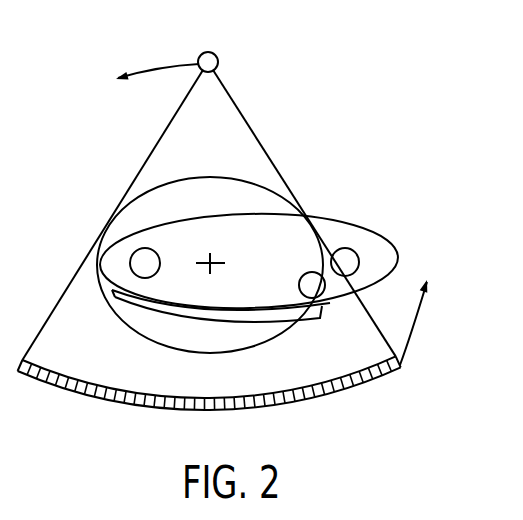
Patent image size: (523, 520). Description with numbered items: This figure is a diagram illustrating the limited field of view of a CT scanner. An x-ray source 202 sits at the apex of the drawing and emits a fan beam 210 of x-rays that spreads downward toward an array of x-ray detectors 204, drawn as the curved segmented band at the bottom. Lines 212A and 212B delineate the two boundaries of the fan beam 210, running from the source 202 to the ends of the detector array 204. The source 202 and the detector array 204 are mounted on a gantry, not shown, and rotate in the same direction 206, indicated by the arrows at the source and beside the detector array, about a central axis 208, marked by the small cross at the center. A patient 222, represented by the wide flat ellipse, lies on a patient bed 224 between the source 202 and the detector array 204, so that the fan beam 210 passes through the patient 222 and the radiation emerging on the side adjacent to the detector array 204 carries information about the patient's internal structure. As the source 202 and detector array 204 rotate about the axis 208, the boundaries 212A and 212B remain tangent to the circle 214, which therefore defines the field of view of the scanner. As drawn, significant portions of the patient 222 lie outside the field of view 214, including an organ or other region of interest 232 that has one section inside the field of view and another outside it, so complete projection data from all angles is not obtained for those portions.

The source 202 is at (219, 62).
The array of x-ray detectors 204 is at (305, 400).
The direction of rotation 206 is at (165, 63).
The central axis 208 is at (216, 261).
The fan beam 210 is at (216, 161).
The boundary line 212A is at (141, 165).
The boundary line 212B is at (240, 108).
The field of view 214 is at (250, 182).
The patient 222 is at (320, 217).
The patient bed 224 is at (132, 313).
The region of interest 232 is at (300, 285).